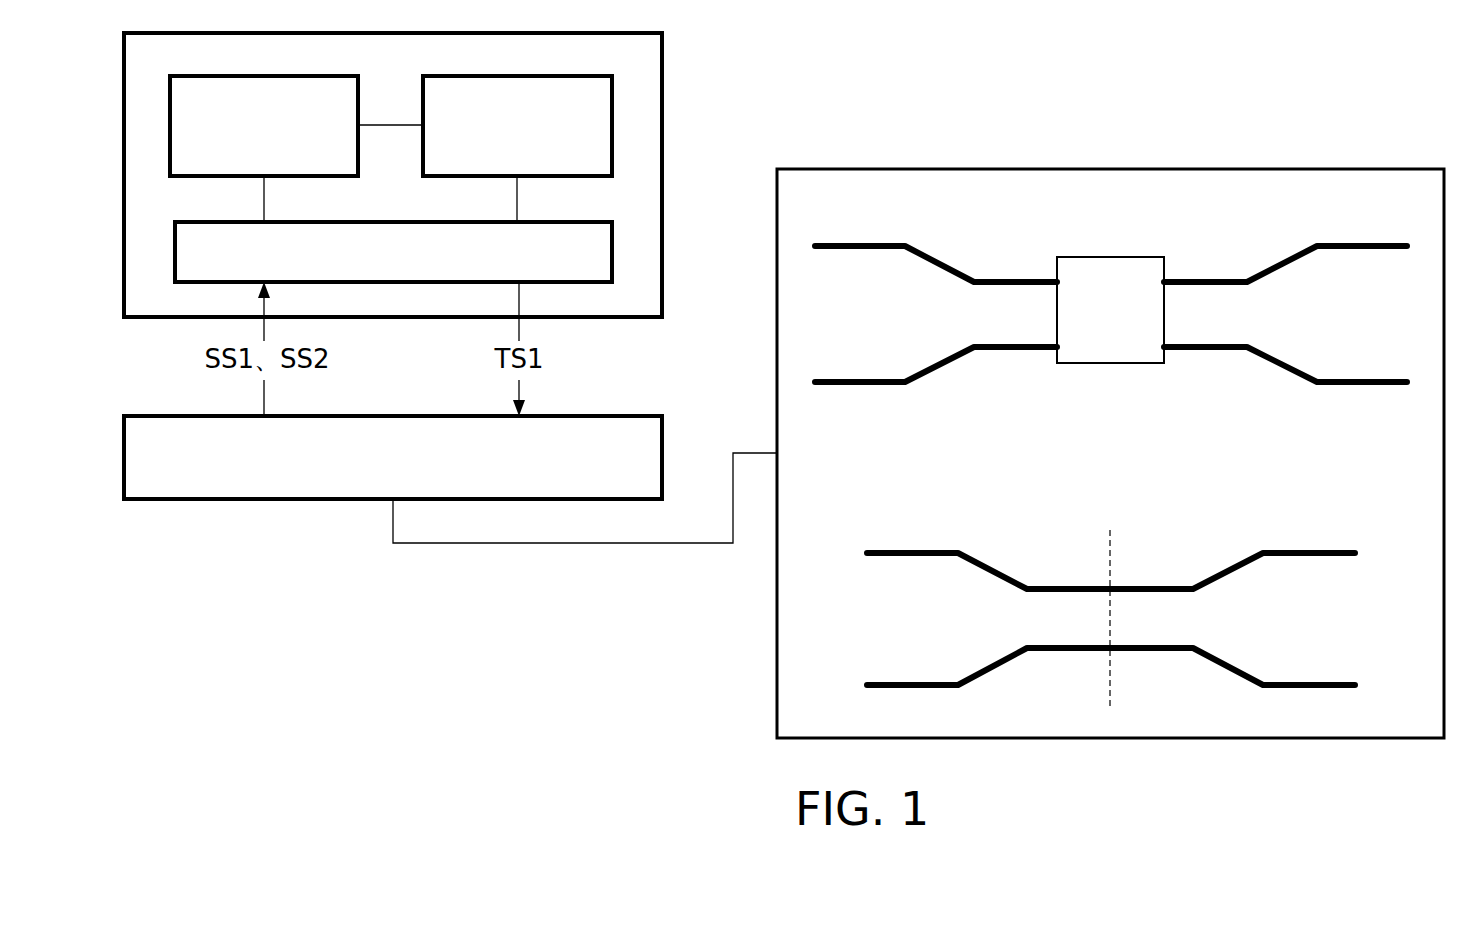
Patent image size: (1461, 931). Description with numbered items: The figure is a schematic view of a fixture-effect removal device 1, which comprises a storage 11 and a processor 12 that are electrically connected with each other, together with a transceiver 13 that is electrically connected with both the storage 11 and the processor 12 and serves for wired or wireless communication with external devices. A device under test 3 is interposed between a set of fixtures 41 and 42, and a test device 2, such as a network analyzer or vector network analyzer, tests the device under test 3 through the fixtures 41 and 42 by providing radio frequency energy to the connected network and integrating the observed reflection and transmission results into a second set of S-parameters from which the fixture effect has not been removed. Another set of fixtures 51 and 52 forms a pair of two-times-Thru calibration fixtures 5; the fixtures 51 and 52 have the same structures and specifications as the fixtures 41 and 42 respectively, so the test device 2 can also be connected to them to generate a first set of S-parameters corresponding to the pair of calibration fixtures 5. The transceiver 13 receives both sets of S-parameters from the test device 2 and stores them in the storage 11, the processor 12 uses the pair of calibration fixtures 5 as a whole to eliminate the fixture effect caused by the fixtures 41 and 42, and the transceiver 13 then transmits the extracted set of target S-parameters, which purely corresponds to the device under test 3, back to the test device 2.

The fixture-effect removal device 1 is at (627, 74).
The storage 11 is at (264, 126).
The processor 12 is at (517, 126).
The transceiver 13 is at (393, 252).
The test device 2 is at (393, 457).
The device under test 3 is at (1110, 310).
The fixture 41 is at (936, 291).
The fixture 42 is at (1285, 291).
The pair of 2×-Thru calibration fixtures 5 is at (1150, 566).
The fixture 51 is at (988, 587).
The fixture 52 is at (1232, 587).